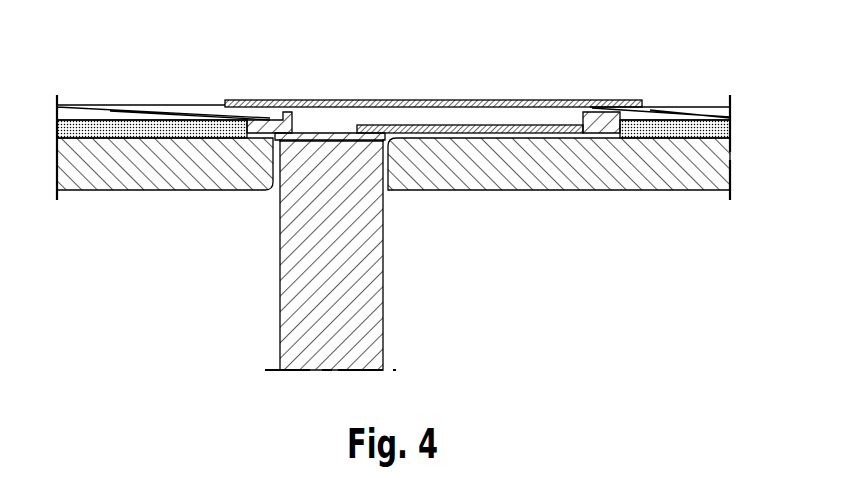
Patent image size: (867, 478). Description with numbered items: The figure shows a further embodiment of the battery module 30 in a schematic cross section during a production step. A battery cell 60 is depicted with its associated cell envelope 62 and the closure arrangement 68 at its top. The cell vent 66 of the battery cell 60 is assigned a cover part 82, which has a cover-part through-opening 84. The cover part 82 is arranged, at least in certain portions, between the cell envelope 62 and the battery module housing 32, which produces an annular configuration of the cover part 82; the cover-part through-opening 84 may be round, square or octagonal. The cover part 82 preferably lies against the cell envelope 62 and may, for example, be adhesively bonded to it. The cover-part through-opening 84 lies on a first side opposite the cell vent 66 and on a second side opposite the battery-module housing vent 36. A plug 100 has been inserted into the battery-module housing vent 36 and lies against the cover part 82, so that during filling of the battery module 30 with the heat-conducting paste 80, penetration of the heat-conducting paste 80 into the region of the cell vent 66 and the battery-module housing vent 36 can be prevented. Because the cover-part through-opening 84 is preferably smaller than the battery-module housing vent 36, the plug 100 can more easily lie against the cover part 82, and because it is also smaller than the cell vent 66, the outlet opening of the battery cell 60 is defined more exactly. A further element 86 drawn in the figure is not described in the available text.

The battery module 30 is at (98, 82).
The battery module housing 32 is at (183, 175).
The battery-module housing vent 36 is at (383, 190).
The battery cell 60 is at (433, 79).
The cell envelope 62 is at (173, 105).
The cell vent 66 is at (292, 100).
The closure arrangement 68 is at (395, 100).
The heat-conducting paste 80 is at (134, 140).
The cover part 82 is at (505, 190).
The cover-part through-opening 84 is at (358, 128).
The spacer 86 is at (583, 118).
The plug 100 is at (375, 313).